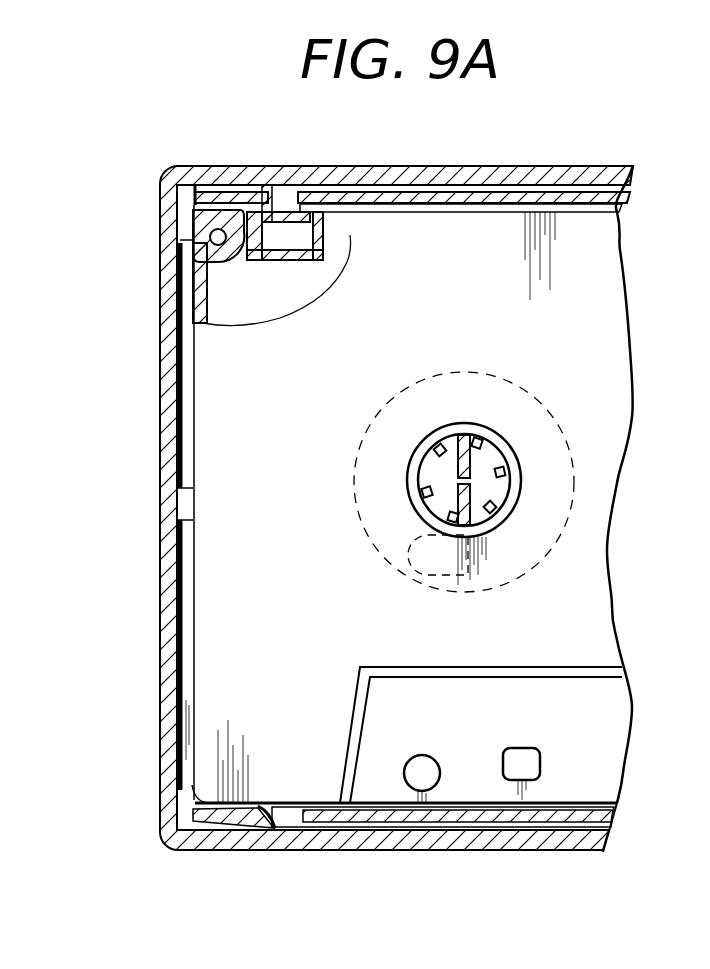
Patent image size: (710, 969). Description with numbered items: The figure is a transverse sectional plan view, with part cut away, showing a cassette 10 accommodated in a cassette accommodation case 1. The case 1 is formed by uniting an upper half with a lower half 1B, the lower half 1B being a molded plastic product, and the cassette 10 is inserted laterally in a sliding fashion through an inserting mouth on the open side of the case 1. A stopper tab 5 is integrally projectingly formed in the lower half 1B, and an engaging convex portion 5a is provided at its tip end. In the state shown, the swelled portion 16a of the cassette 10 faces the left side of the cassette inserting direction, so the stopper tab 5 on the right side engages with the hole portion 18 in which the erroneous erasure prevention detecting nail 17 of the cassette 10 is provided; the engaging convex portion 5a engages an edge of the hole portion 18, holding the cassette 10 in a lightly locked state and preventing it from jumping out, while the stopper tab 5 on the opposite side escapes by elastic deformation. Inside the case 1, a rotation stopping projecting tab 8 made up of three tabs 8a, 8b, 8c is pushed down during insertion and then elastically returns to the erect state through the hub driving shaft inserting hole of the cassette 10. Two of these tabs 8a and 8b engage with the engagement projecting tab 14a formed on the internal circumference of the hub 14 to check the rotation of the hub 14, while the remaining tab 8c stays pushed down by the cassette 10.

The cassette accommodation case 1 is at (160, 354).
The lower half 1B is at (170, 441).
The stopper tab 5 is at (232, 190).
The engaging convex portion 5a is at (268, 222).
The rotation stopping projecting tab 8 is at (283, 433).
The tab 8a is at (470, 465).
The tab 8b is at (457, 503).
The tab 8c is at (407, 557).
The cassette 10 is at (210, 568).
The hub 14 is at (457, 372).
The engagement projecting tab 14a is at (480, 462).
The swelled portion 16a is at (578, 783).
The erroneous erasure prevention detecting nail 17 is at (290, 208).
The hole portion 18 is at (252, 212).